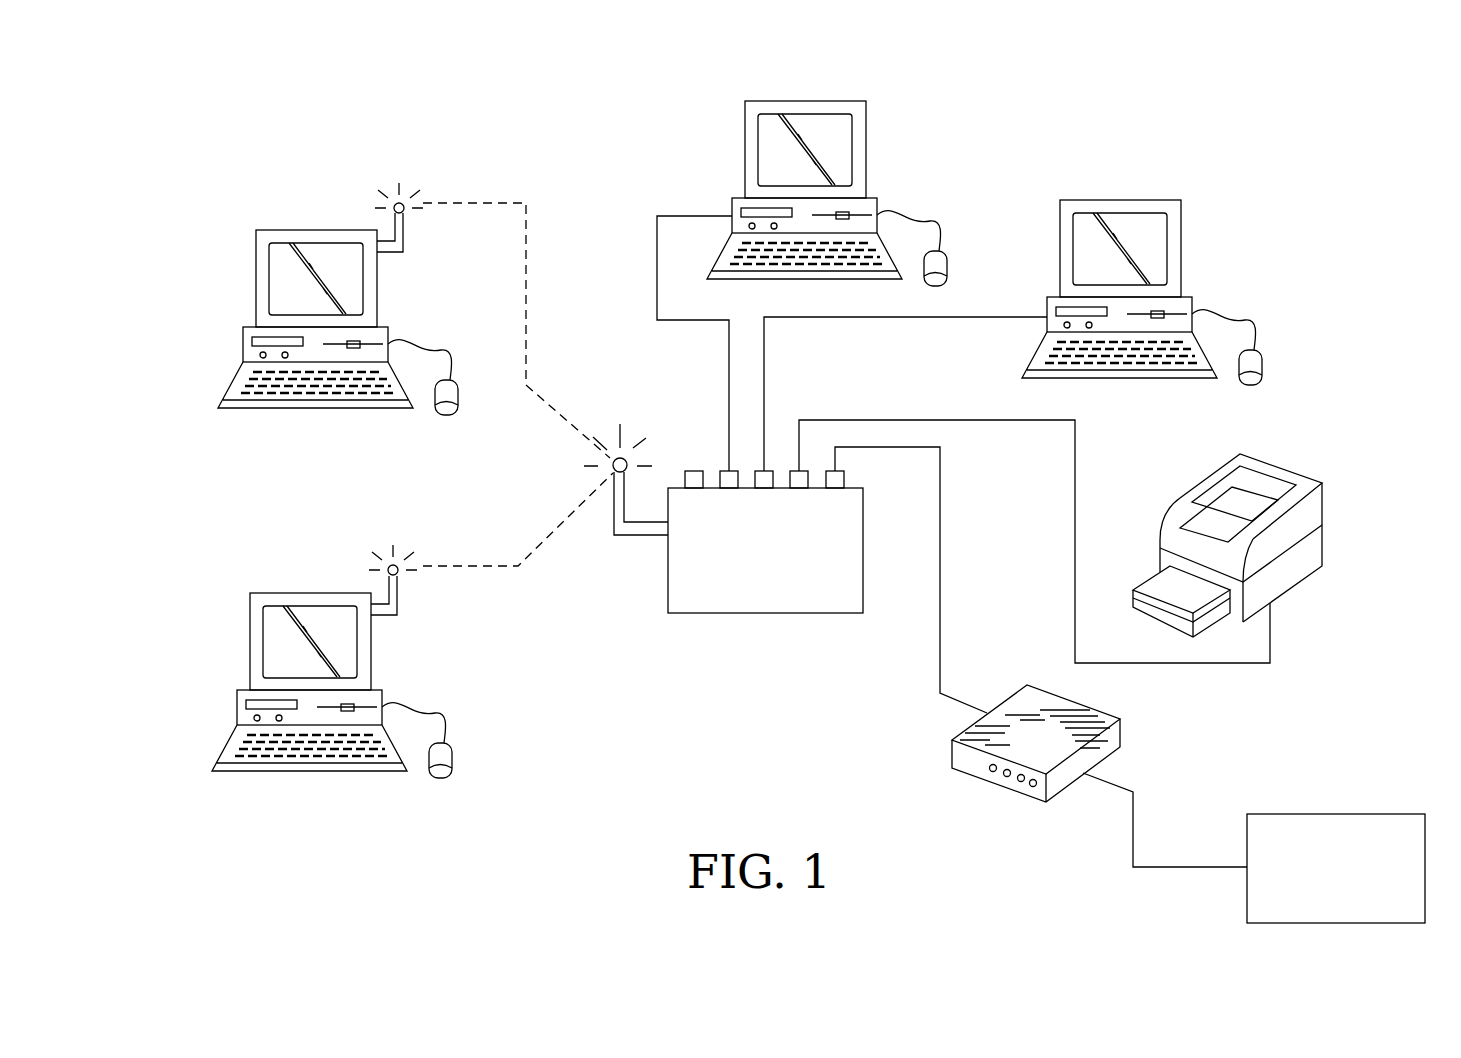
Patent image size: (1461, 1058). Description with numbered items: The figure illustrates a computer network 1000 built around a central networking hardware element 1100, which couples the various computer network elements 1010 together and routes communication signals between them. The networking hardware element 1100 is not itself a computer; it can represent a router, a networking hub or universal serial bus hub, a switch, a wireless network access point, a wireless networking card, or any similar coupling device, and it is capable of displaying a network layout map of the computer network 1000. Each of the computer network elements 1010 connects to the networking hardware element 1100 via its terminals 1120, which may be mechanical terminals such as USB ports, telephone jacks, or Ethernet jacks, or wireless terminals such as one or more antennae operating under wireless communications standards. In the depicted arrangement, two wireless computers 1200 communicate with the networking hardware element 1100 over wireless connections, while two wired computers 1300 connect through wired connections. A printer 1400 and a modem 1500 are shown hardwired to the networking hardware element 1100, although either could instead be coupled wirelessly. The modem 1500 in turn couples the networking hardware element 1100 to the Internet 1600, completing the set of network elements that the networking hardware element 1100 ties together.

The computer network 1000 is at (637, 770).
The computer network elements 1010 is at (243, 430).
The networking hardware element 1100 is at (755, 615).
The terminals 1120 is at (722, 472).
The wireless computers 1200 is at (256, 263).
The wired computers 1300 is at (745, 130).
The printer 1400 is at (1322, 508).
The modem 1500 is at (1121, 722).
The Internet 1600 is at (1387, 813).